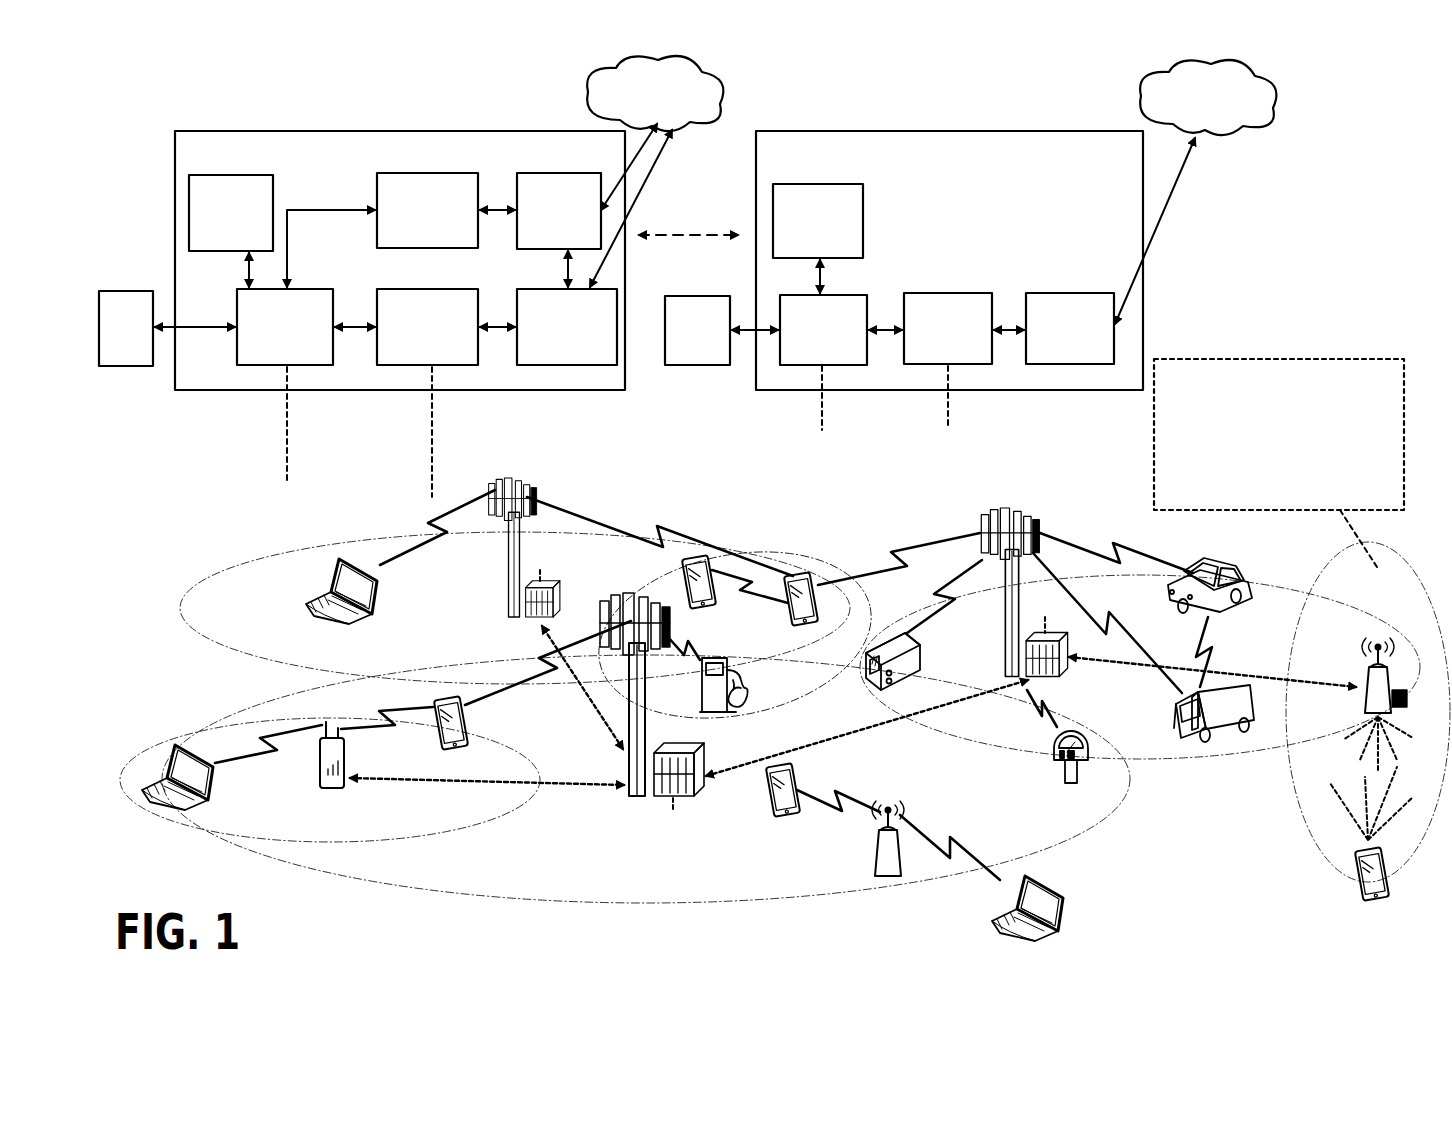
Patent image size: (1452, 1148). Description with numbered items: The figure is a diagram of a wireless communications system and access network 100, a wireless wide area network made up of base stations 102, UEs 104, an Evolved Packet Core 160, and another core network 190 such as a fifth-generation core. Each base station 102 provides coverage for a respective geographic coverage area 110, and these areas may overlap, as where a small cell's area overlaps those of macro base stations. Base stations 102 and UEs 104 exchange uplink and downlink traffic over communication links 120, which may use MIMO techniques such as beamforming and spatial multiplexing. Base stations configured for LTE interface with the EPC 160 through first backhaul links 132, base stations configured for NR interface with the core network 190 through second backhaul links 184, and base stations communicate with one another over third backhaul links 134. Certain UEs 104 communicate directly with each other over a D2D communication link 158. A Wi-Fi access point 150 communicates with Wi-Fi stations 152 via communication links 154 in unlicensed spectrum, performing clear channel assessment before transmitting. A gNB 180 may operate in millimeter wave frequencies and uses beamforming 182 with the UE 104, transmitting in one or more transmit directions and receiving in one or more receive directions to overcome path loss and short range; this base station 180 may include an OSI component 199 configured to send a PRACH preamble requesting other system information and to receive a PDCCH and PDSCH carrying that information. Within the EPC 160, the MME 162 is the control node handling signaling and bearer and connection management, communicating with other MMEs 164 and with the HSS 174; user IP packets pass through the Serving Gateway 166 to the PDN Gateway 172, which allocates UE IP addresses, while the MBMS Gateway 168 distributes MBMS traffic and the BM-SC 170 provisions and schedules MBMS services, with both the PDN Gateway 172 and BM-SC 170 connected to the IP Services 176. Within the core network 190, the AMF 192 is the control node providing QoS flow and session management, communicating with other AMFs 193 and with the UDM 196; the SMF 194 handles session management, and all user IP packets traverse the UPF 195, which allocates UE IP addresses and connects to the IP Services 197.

The wireless communications system and access network 100 is at (169, 120).
The base station 102 is at (514, 598).
The UE 104 is at (361, 624).
The geographic coverage area 110 is at (218, 674).
The communication link 120 is at (439, 526).
The first backhaul link 132 is at (293, 394).
The third backhaul link 134 is at (584, 714).
The Wi-Fi access point 150 is at (892, 886).
The Wi-Fi station 152 is at (755, 802).
The communication link 154 is at (840, 796).
The D2D communication link 158 is at (760, 596).
The Evolved Packet Core 160 is at (299, 186).
The Mobility Management Entity 162 is at (297, 289).
The other MMEs 164 is at (210, 175).
The Serving Gateway 166 is at (447, 289).
The MBMS Gateway 168 is at (419, 173).
The Broadcast Multicast Service Center 170 is at (558, 173).
The PDN Gateway 172 is at (530, 290).
The Home Subscriber Server 174 is at (130, 291).
The IP Services 176 is at (733, 102).
The gNB 180 is at (1382, 618).
The beamforming 182 is at (1340, 748).
The second backhaul link 184 is at (824, 395).
The core network 190 is at (922, 217).
The Access and Mobility Management Function 192 is at (840, 294).
The other AMFs 193 is at (820, 185).
The Session Management Function 194 is at (966, 292).
The User Plane Function 195 is at (1096, 292).
The Unified Data Management 196 is at (711, 294).
The IP Services 197 is at (1280, 94).
The OSI component 199 is at (1208, 359).